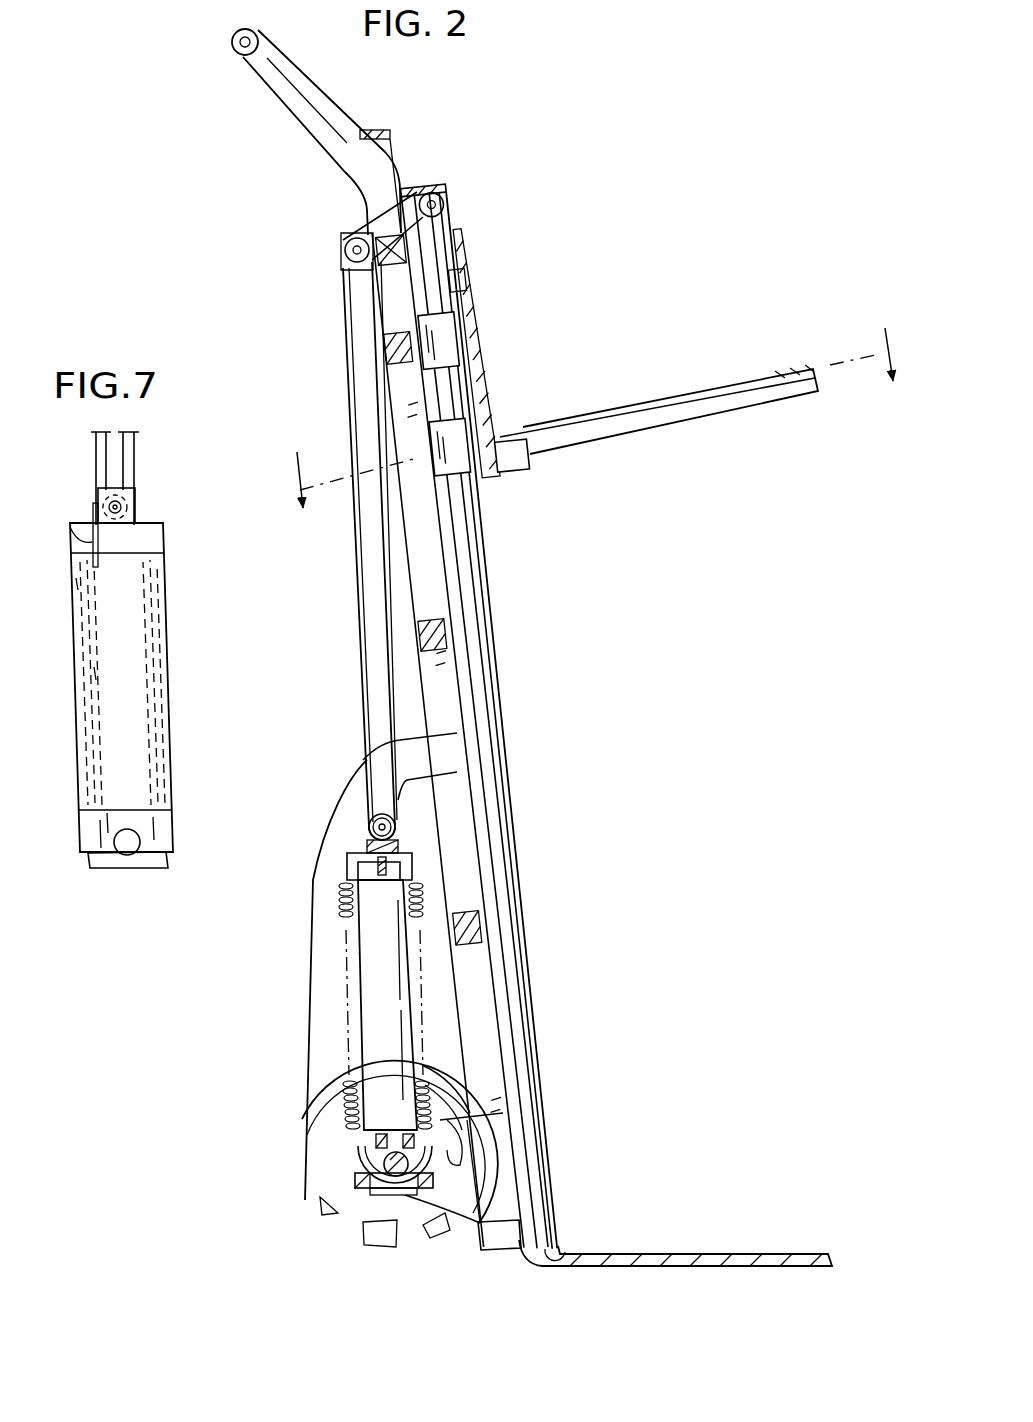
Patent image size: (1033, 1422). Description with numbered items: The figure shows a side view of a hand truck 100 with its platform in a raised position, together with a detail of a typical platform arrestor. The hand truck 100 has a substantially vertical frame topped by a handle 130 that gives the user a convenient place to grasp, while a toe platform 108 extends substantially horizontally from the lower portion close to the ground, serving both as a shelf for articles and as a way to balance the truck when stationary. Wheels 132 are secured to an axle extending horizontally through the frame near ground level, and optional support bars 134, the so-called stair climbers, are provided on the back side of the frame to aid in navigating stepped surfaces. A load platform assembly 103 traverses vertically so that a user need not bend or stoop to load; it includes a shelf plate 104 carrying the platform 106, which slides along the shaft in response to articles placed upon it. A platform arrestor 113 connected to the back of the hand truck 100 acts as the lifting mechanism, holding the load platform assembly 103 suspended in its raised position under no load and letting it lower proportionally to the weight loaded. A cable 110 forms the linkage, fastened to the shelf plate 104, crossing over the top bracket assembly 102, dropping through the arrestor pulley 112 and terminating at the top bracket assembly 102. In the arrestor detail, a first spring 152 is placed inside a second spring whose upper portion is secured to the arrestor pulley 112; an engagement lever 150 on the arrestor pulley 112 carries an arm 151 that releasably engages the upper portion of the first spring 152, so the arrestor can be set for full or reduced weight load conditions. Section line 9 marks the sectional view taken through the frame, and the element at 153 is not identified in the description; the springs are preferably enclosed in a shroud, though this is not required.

In FIG. 2, the hand truck 100 is at (512, 702).
In FIG. 2, the top bracket assembly 102 is at (462, 237).
In FIG. 2, the load platform assembly 103 is at (555, 403).
In FIG. 2, the shelf plate 104 is at (484, 385).
In FIG. 2, the platform 106 is at (742, 415).
In FIG. 2, the toe platform 108 is at (820, 1268).
In FIG. 7, the cable 110 is at (138, 455).
In FIG. 2, the arrestor pulley 112 is at (358, 825).
In FIG. 7, the arrestor pulley 112 is at (146, 503).
In FIG. 2, the platform arrestor 113 is at (355, 1016).
In FIG. 7, the platform arrestor 113 is at (180, 638).
In FIG. 2, the handle 130 is at (238, 60).
In FIG. 2, the wheels 132 is at (290, 1170).
In FIG. 2, the support bars 134 is at (305, 984).
In FIG. 7, the engagement lever 150 is at (84, 498).
In FIG. 7, the arm 151 is at (92, 542).
In FIG. 7, the first spring 152 is at (76, 578).
In FIG. 7, the cylinder wall 153 is at (94, 667).
In FIG. 2, the section line 9- 9 is at (595, 418).